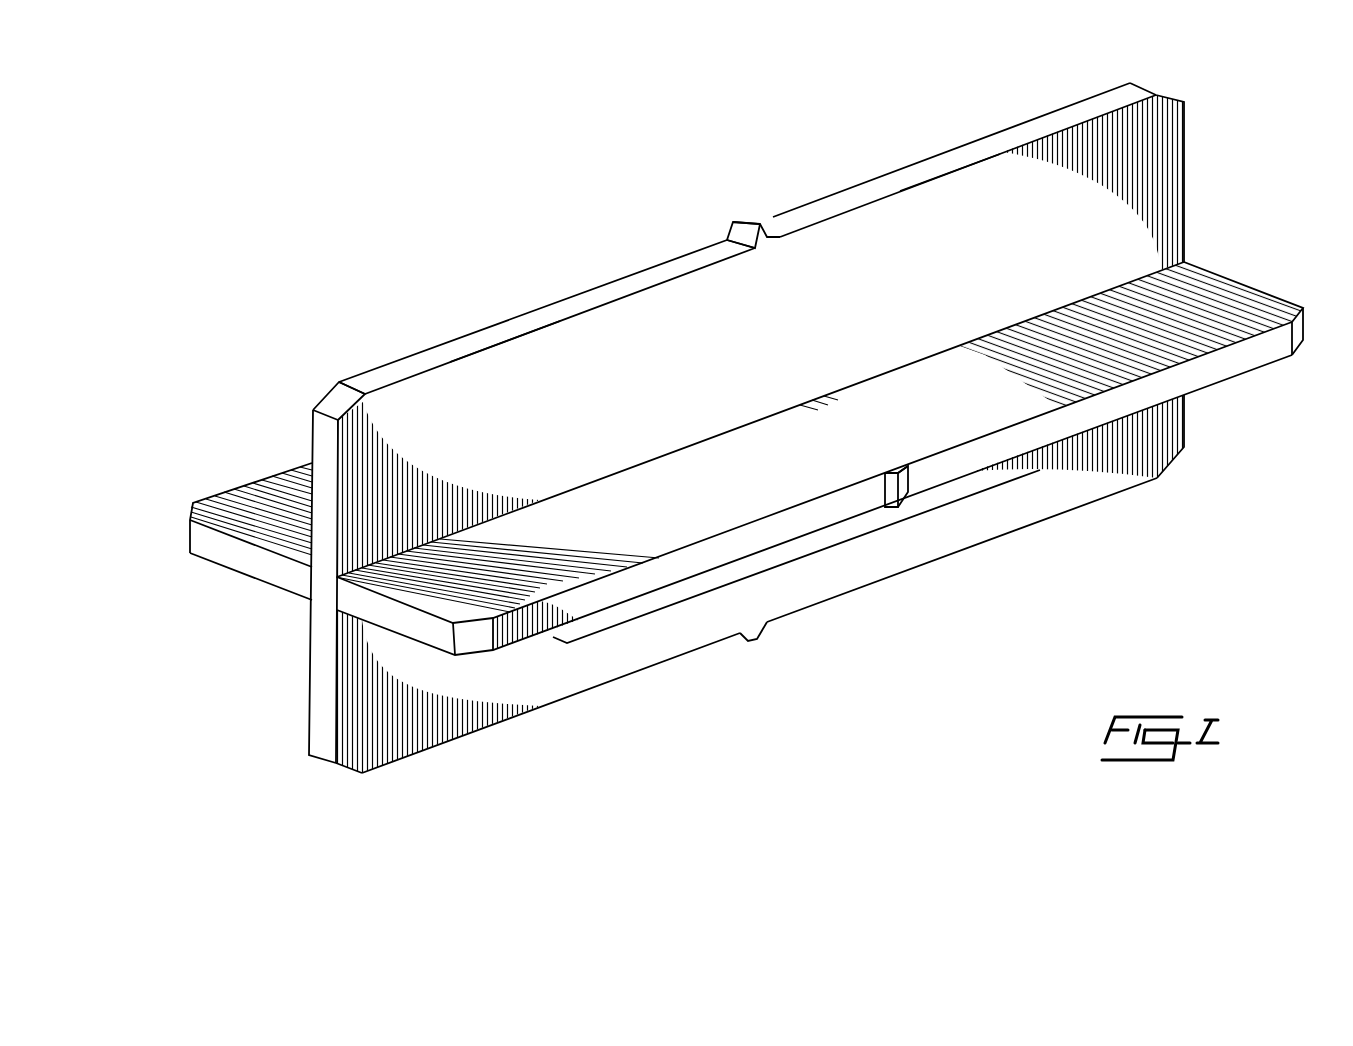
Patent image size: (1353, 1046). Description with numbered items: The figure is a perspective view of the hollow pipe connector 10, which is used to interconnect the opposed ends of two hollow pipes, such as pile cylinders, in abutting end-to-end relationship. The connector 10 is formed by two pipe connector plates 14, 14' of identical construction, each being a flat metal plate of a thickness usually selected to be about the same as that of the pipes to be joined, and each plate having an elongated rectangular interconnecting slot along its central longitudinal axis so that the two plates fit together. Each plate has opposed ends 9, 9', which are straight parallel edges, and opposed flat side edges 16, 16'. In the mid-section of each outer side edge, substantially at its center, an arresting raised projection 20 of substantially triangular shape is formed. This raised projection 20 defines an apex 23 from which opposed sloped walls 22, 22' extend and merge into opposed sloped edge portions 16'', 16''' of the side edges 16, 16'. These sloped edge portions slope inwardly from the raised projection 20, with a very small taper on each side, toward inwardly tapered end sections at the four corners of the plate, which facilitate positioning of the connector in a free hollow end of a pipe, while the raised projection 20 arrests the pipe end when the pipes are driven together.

The pipe connector 10 is at (856, 154).
The opposed end 9 is at (702, 374).
The opposed end 9' is at (757, 485).
The pipe connector plate 14 is at (760, 389).
The pipe connector plate 14' is at (819, 460).
The side edge 16 is at (562, 271).
The side edge 16' is at (829, 564).
The sloped edge portion 16'' is at (505, 277).
The sloped edge portion 16''' is at (967, 124).
The arresting raised projection 20 is at (746, 226).
The sloped wall 22 is at (708, 228).
The sloped wall 22' is at (790, 194).
The apex 23 is at (737, 220).